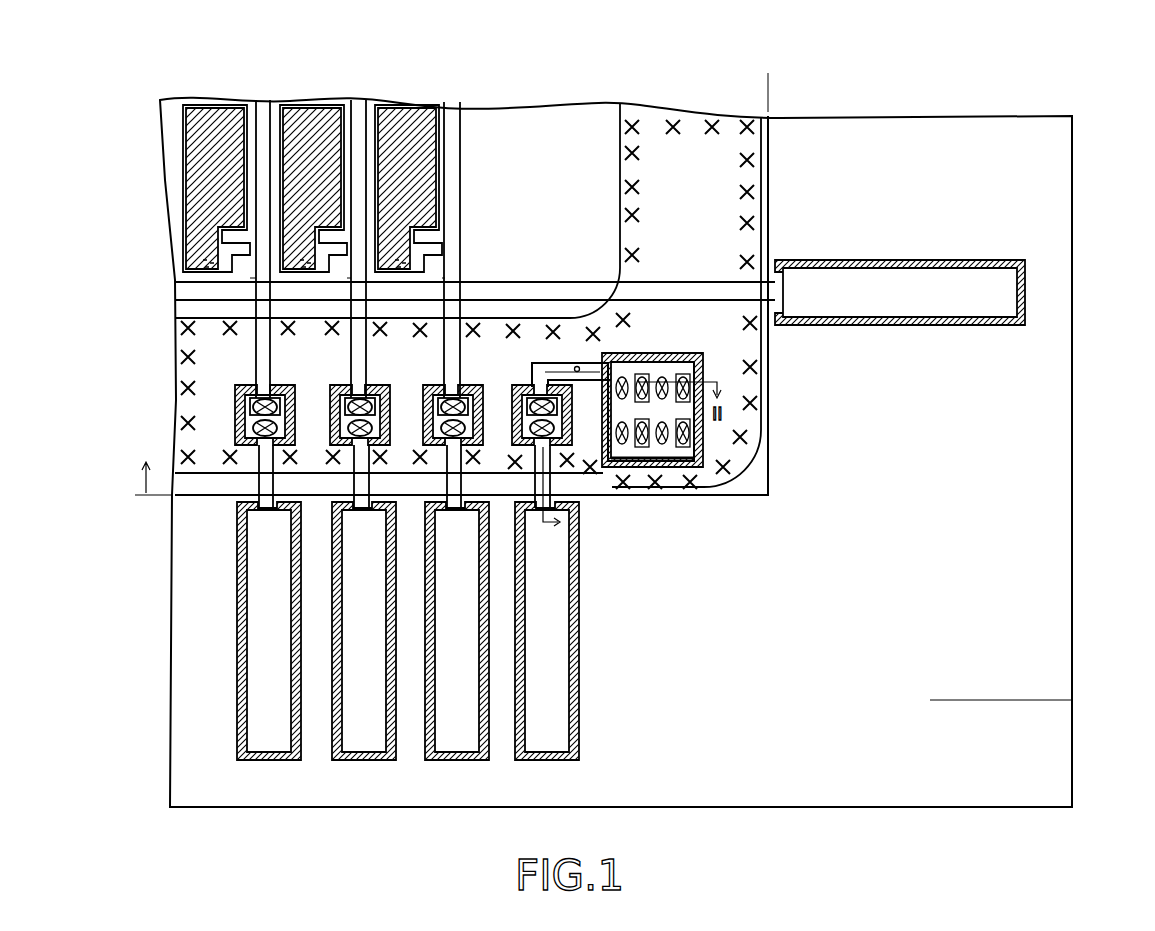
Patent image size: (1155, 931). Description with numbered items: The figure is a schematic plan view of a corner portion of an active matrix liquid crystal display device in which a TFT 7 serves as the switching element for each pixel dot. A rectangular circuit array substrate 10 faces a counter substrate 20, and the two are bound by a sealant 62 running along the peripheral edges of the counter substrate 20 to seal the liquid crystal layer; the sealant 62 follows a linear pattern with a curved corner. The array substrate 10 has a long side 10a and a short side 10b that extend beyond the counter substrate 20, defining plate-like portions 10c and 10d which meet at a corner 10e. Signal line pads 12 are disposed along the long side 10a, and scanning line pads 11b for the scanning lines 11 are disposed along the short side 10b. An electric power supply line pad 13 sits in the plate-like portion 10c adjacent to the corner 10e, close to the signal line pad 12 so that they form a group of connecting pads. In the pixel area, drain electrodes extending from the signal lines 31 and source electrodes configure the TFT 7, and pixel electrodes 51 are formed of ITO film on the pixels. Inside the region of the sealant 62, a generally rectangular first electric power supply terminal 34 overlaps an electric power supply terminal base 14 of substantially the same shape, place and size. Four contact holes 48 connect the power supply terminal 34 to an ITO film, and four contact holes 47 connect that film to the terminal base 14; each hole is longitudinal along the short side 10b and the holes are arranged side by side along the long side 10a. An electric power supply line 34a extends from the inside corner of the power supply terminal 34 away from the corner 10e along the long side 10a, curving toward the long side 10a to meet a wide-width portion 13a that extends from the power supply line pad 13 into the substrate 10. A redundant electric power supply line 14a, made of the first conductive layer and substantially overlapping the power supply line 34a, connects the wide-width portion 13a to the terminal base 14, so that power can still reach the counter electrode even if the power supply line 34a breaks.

The circuit array substrate 10 is at (822, 850).
The long side 10a is at (950, 807).
The short side 10b is at (1072, 700).
The plate-like portion 10c is at (682, 667).
The plate-like portion 10d is at (1022, 424).
The corner 10e is at (932, 623).
The scanning line 11 is at (185, 287).
The scanning line pad 11b is at (922, 300).
The TFT 7 is at (423, 270).
The signal line pad 12 is at (453, 745).
The electric power supply line pad 13 is at (548, 745).
The wide-width portion 13a is at (572, 447).
The electric power supply terminal base 14 is at (609, 465).
The redundant electric power supply line 14a is at (553, 360).
The counter substrate 20 is at (748, 81).
The signal line 31 is at (355, 108).
The first electric power supply terminal 34 is at (633, 453).
The electric power supply line 34a is at (577, 366).
The contact hole 47 is at (684, 375).
The contact hole 48 is at (660, 378).
The pixel electrode 51 is at (310, 122).
The sealant 62 is at (752, 96).